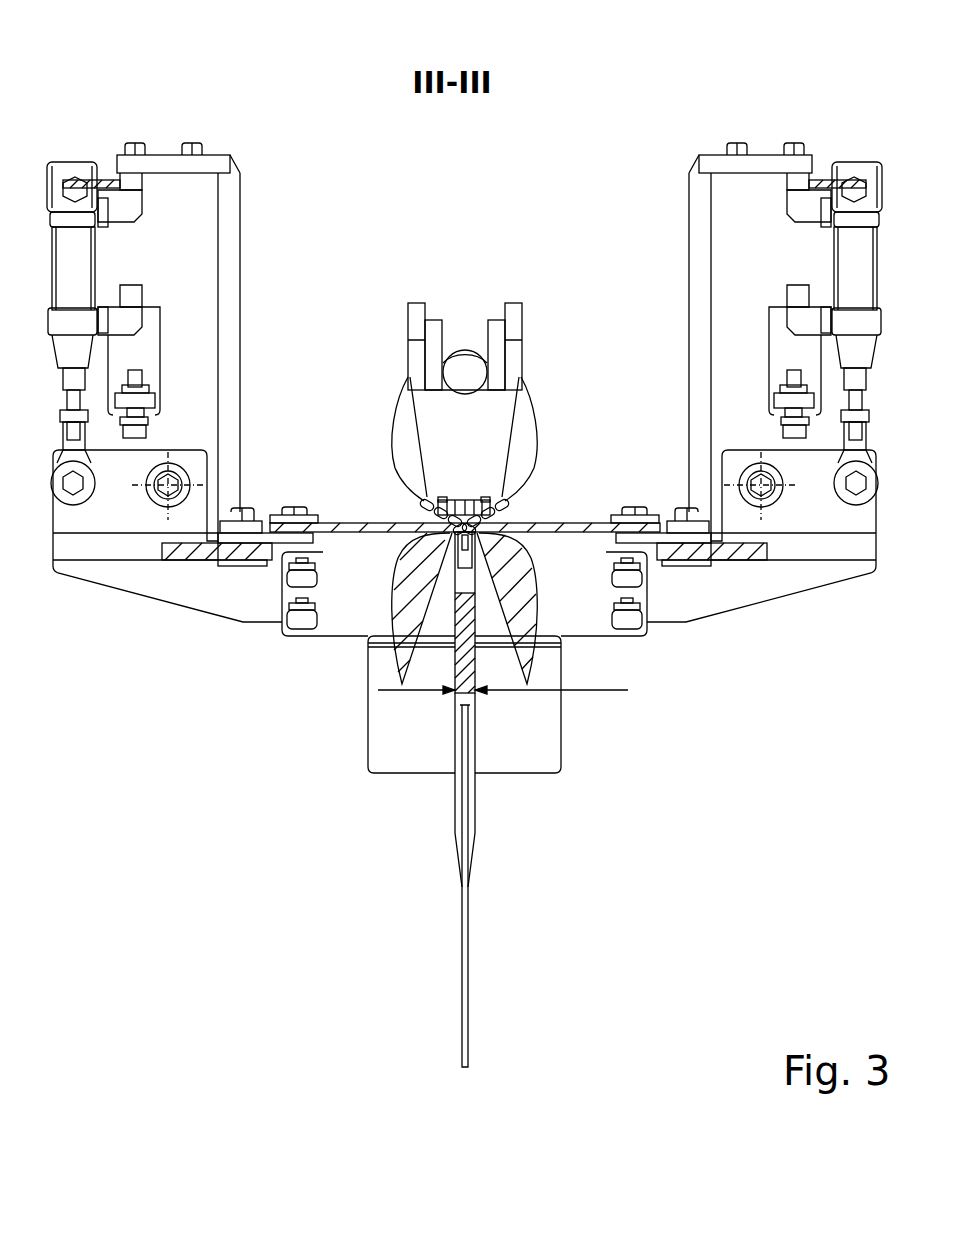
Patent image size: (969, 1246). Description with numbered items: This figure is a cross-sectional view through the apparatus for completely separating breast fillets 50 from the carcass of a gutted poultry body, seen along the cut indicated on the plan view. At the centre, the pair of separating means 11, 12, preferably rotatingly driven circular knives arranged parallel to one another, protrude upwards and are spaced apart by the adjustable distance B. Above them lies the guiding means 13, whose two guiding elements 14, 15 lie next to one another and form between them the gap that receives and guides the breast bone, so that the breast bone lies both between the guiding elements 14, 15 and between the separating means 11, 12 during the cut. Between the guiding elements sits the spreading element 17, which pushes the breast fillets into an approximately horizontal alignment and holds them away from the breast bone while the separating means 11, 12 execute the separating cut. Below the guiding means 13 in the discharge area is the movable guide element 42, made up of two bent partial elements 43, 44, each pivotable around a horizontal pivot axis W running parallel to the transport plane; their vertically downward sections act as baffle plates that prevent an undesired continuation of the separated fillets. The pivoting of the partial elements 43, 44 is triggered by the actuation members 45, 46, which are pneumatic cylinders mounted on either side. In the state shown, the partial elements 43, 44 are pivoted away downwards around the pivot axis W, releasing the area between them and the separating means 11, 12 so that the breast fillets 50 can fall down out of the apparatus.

The separating means 11 is at (457, 832).
The separating means 12 is at (472, 832).
The guiding means 13 is at (566, 505).
The guiding element 14 is at (365, 531).
The guiding element 15 is at (577, 531).
The spreading element 17 is at (462, 650).
The guide element 42 is at (259, 626).
The partial element 43 is at (335, 598).
The partial element 44 is at (610, 592).
The actuation member 45 is at (77, 265).
The actuation member 46 is at (850, 265).
The breast fillets 50 is at (540, 633).
The pivot axis W is at (178, 475).
The distance B is at (503, 709).